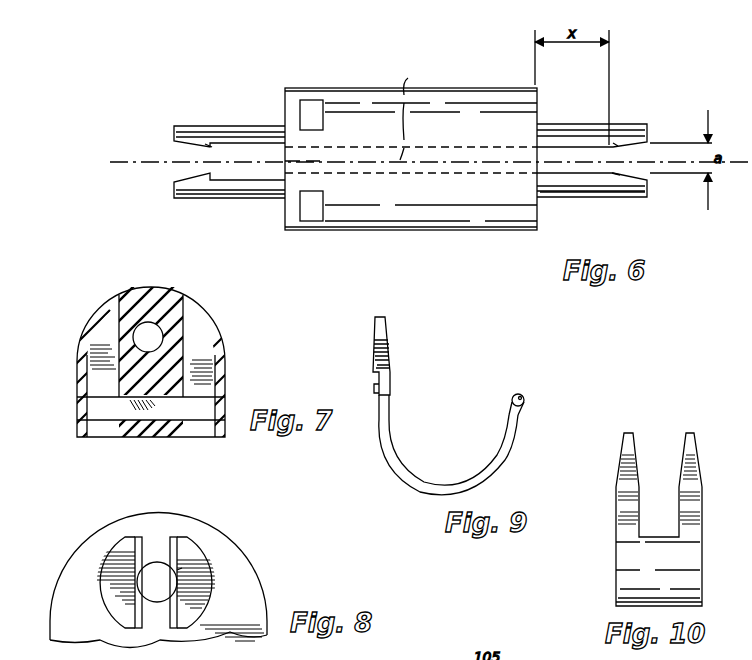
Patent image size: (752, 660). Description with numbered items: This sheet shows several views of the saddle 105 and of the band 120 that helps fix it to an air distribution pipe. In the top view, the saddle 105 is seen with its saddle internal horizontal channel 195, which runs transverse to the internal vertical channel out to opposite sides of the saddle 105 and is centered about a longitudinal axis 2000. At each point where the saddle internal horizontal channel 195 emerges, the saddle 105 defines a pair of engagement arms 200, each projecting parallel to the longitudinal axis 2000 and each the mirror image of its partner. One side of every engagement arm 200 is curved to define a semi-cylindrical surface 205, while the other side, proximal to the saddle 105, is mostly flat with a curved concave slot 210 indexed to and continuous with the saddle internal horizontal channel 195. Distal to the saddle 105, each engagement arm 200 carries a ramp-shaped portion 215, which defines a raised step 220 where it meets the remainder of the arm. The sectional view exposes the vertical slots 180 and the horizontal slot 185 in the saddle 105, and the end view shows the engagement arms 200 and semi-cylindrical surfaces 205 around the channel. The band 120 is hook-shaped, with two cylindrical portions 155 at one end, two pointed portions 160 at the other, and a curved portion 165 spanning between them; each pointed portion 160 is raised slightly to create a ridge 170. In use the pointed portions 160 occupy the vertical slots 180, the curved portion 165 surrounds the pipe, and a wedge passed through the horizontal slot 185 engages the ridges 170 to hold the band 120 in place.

In FIG. 6, the saddle 105 is at (288, 70).
In FIG. 7, the saddle 105 is at (52, 325).
In FIG. 8, the saddle 105 is at (60, 550).
In FIG. 9, the band 120 is at (358, 340).
In FIG. 10, the band 120 is at (700, 420).
In FIG. 9, the cylindrical portions 155 is at (521, 392).
In FIG. 9, the pointed portions 160 is at (384, 330).
In FIG. 10, the pointed portions 160 is at (625, 440).
In FIG. 9, the curved portion 165 is at (420, 489).
In FIG. 10, the curved portion 165 is at (630, 581).
In FIG. 9, the ridges 170 is at (372, 392).
In FIG. 6, the vertical slots 180 is at (302, 110).
In FIG. 7, the vertical slots 180 is at (103, 325).
In FIG. 7, the horizontal slot 185 is at (87, 412).
In FIG. 6, the saddle internal horizontal channel 195 is at (411, 122).
In FIG. 7, the saddle internal horizontal channel 195 is at (148, 330).
In FIG. 8, the saddle internal horizontal channel 195 is at (157, 578).
In FIG. 6, the engagement arms 200 is at (163, 132).
In FIG. 8, the engagement arms 200 is at (112, 548).
In FIG. 6, the semi-cylindrical surface 205 is at (600, 191).
In FIG. 8, the semi-cylindrical surface 205 is at (108, 606).
In FIG. 6, the curved concave slot 210 is at (240, 142).
In FIG. 8, the curved concave slot 210 is at (178, 568).
In FIG. 6, the ramp-shaped portion 215 is at (620, 172).
In FIG. 6, the raised step 220 is at (608, 140).
In FIG. 6, the longitudinal axis 2000 is at (113, 162).